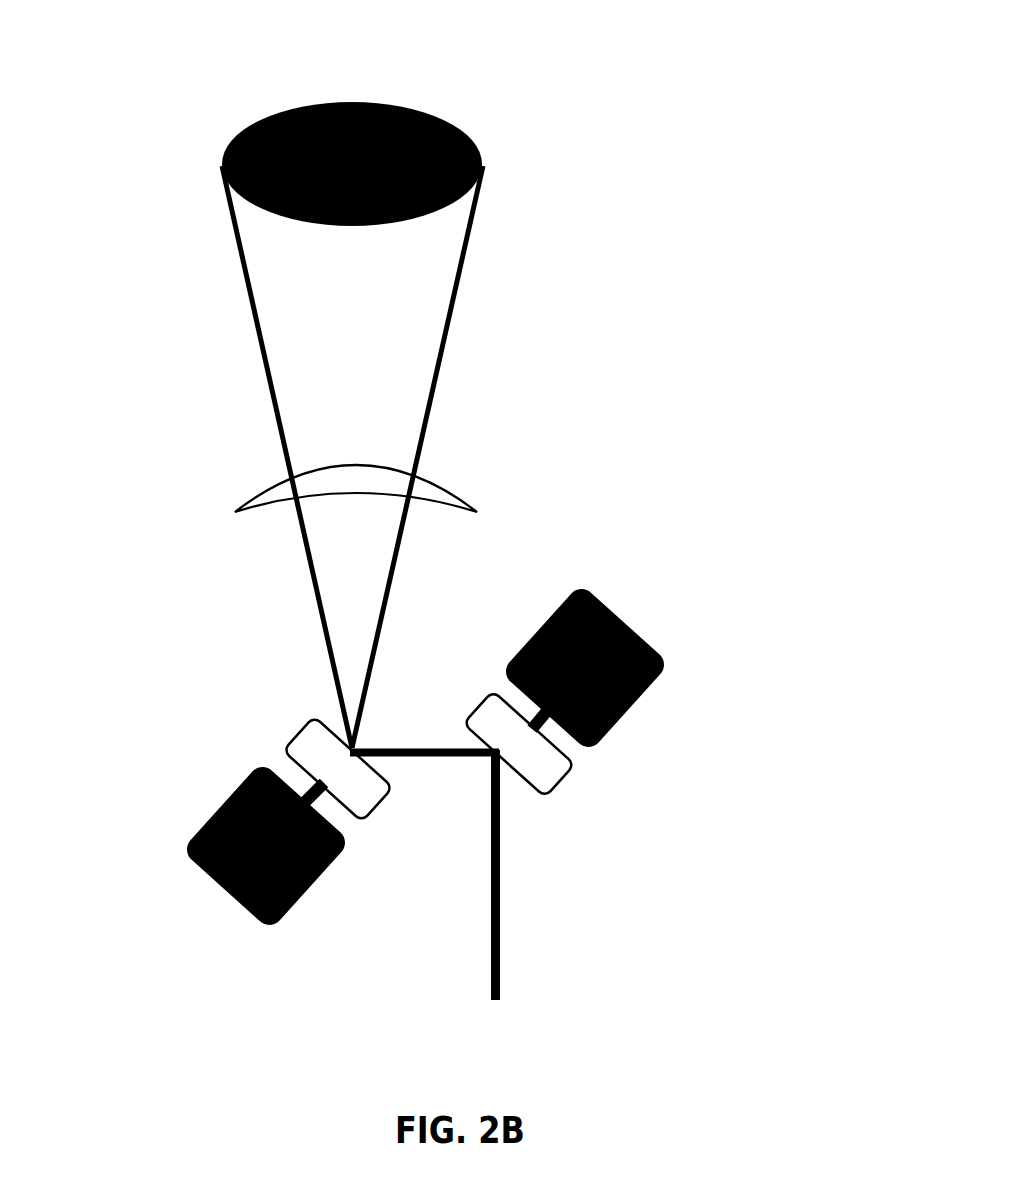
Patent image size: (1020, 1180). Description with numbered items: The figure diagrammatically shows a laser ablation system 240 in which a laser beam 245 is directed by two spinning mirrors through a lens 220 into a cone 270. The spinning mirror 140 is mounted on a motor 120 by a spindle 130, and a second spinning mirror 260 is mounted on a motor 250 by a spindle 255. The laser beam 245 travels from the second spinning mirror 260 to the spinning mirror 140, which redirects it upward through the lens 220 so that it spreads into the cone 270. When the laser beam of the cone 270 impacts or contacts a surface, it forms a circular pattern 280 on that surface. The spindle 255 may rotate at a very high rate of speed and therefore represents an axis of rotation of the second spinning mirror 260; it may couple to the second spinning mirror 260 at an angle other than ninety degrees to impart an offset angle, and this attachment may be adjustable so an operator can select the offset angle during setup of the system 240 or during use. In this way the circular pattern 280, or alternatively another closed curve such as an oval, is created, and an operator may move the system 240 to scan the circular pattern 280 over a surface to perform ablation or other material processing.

The motor 120 is at (213, 798).
The spindle 130 is at (303, 790).
The spinning mirror 140 is at (338, 768).
The lens 220 is at (471, 504).
The system 240 is at (685, 116).
The laser beam 245 is at (495, 905).
The motor 250 is at (634, 648).
The spindle 255 is at (545, 732).
The second spinning mirror 260 is at (518, 744).
The cone 270 is at (252, 303).
The circular pattern 280 is at (373, 117).